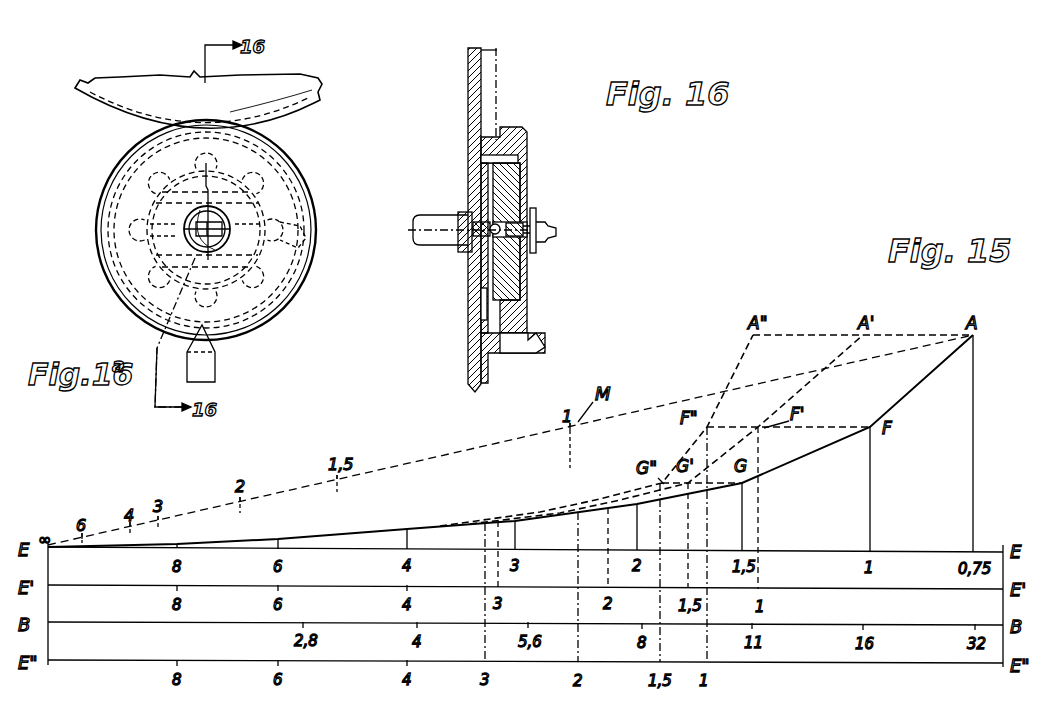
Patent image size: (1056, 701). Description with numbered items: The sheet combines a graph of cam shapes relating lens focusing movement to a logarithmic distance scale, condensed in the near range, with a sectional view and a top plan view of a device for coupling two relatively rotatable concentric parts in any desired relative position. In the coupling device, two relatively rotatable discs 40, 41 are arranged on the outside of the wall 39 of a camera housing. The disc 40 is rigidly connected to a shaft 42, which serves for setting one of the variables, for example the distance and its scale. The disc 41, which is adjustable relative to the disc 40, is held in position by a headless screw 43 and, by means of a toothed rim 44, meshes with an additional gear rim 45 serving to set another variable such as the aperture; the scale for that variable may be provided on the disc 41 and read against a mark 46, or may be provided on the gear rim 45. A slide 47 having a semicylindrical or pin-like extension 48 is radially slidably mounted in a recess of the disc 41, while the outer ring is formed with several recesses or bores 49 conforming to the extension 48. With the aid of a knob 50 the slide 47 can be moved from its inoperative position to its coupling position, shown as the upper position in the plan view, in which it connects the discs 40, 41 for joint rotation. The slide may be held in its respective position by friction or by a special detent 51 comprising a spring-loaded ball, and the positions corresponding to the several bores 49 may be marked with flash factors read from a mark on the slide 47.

In FIG. 16, the wall 39 is at (470, 72).
In FIG. 16A, the disc 40 is at (145, 183).
In FIG. 16, the disc 40 is at (480, 272).
In FIG. 16A, the disc 41 is at (303, 277).
In FIG. 16, the disc 41 is at (518, 300).
In FIG. 16, the shaft 42 is at (423, 215).
In FIG. 16A, the headless screw 43 is at (138, 307).
In FIG. 16, the headless screw 43 is at (479, 318).
In FIG. 16A, the toothed rim 44 is at (288, 302).
In FIG. 16, the toothed rim 44 is at (479, 328).
In FIG. 16A, the gear rim 45 is at (112, 97).
In FIG. 16, the gear rim 45 is at (502, 73).
In FIG. 16A, the mark 46 is at (207, 364).
In FIG. 16, the mark 46 is at (547, 347).
In FIG. 16A, the slide 47 is at (138, 240).
In FIG. 16A, the extension 48 is at (305, 238).
In FIG. 16A, the recesses or bores 49 is at (283, 223).
In FIG. 16, the recesses or bores 49 is at (523, 158).
In FIG. 16A, the knob 50 is at (230, 218).
In FIG. 16, the knob 50 is at (538, 209).
In FIG. 16, the detent 51 is at (468, 212).